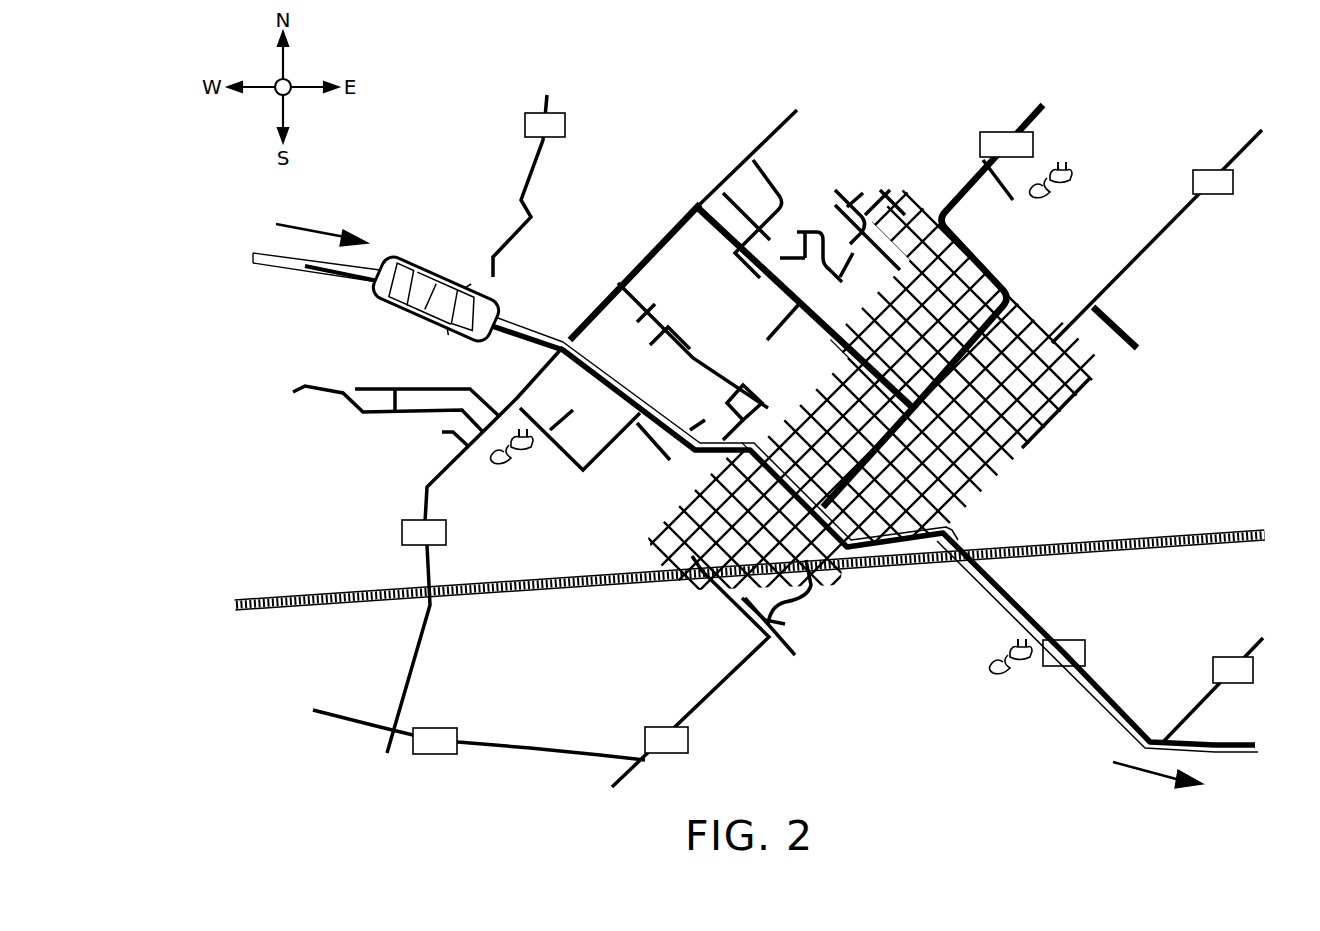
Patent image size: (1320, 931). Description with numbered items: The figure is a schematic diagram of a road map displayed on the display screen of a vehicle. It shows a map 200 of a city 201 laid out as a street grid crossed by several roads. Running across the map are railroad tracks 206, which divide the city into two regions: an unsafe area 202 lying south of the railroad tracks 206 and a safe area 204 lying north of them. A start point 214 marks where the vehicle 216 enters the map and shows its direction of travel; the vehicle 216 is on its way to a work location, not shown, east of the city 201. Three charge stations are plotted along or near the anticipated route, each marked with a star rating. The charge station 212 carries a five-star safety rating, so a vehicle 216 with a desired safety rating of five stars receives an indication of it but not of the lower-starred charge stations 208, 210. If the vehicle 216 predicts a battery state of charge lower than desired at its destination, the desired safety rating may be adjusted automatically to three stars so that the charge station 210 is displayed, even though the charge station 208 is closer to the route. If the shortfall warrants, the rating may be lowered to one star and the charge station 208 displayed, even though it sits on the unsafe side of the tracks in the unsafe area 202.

The map 200 is at (1045, 58).
The city 201 is at (690, 200).
The unsafe area 202 is at (843, 745).
The safe area 204 is at (1097, 440).
The railroad tracks 206 is at (1196, 528).
The charge station 208 is at (1000, 653).
The charge station 210 is at (525, 442).
The charge station 212 is at (1070, 178).
The start point 214 is at (310, 226).
The vehicle 216 is at (428, 280).